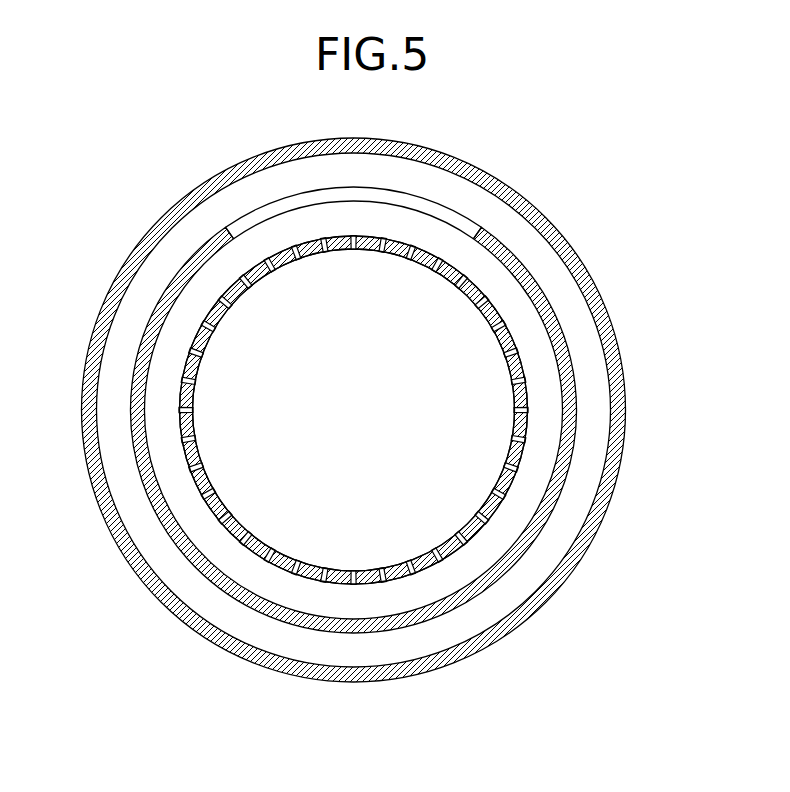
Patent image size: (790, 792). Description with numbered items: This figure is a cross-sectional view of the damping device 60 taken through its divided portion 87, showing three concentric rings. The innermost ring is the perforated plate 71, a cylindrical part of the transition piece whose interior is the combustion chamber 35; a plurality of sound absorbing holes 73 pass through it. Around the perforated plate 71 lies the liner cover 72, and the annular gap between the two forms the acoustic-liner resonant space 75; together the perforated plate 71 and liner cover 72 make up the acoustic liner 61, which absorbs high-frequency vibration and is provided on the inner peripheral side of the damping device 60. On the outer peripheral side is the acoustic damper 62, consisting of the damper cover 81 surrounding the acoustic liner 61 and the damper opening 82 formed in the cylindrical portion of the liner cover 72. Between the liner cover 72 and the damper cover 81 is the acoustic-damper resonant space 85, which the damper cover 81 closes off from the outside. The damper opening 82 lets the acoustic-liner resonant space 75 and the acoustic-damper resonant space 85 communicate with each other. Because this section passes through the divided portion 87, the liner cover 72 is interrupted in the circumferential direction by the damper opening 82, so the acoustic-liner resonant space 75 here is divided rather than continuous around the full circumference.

The combustion chamber 35 is at (362, 423).
The damping device 60 is at (378, 385).
The acoustic liner 61 is at (368, 383).
The acoustic damper 62 is at (390, 385).
The perforated plate 71 is at (353, 427).
The liner cover 72 is at (541, 290).
The sound absorbing holes 73 is at (353, 247).
The acoustic-liner resonant space 75 is at (362, 615).
The damper cover 81 is at (347, 137).
The damper opening 82 is at (445, 213).
The acoustic-damper resonant space 85 is at (295, 186).
The divided portion 87 is at (208, 216).